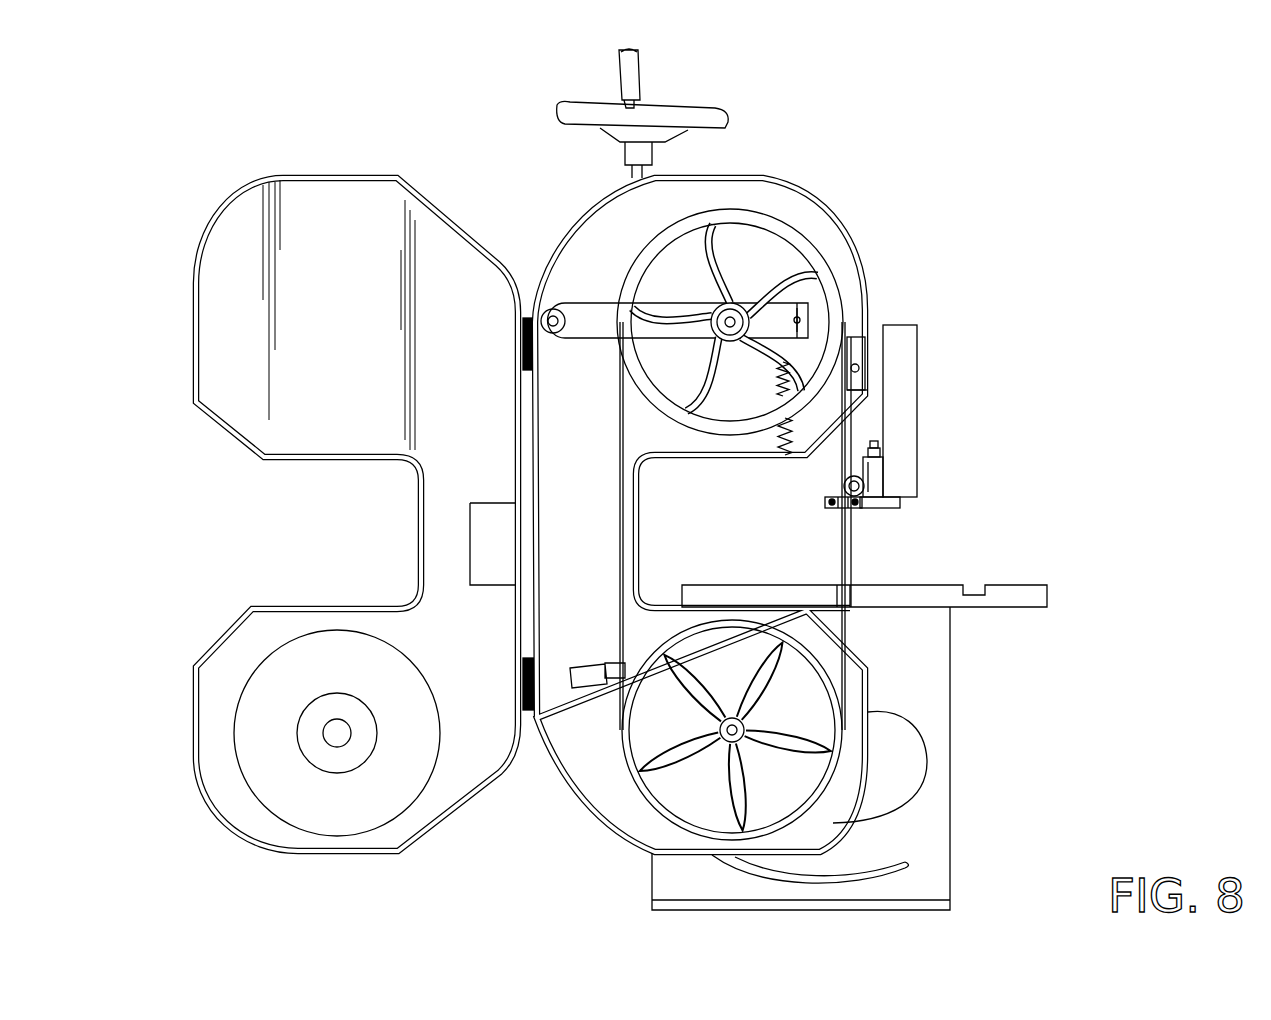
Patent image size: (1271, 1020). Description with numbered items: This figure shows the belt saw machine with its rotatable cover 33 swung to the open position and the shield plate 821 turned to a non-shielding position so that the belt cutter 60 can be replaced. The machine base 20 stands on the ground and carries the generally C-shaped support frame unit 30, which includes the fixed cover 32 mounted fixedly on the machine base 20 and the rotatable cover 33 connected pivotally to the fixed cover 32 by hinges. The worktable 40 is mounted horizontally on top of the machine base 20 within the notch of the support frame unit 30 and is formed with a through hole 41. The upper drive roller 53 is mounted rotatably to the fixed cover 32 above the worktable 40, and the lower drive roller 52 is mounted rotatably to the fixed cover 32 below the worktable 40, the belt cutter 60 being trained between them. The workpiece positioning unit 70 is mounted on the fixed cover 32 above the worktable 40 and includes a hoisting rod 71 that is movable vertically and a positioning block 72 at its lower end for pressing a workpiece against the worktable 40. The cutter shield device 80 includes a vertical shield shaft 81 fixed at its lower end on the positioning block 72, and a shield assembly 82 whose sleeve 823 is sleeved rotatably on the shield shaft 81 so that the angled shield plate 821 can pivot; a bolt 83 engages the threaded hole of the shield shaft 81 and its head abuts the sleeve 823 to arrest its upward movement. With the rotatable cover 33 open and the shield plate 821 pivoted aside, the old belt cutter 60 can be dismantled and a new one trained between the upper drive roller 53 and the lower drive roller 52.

The machine base 20 is at (950, 840).
The support frame unit 30 is at (208, 226).
The fixed cover 32 is at (792, 175).
The rotatable cover 33 is at (320, 175).
The worktable 40 is at (1050, 594).
The through hole 41 is at (850, 592).
The lower drive roller 52 is at (832, 756).
The upper drive roller 53 is at (822, 267).
The belt cutter 60 is at (844, 553).
The workpiece positioning unit 70 is at (826, 503).
The hoisting rod 71 is at (837, 452).
The positioning block 72 is at (900, 505).
The cutter shield device 80 is at (985, 403).
The shield shaft 81 is at (865, 486).
The shield assembly 82 is at (918, 365).
The shield plate 821 is at (905, 412).
The sleeve 823 is at (885, 483).
The bolt 83 is at (878, 472).